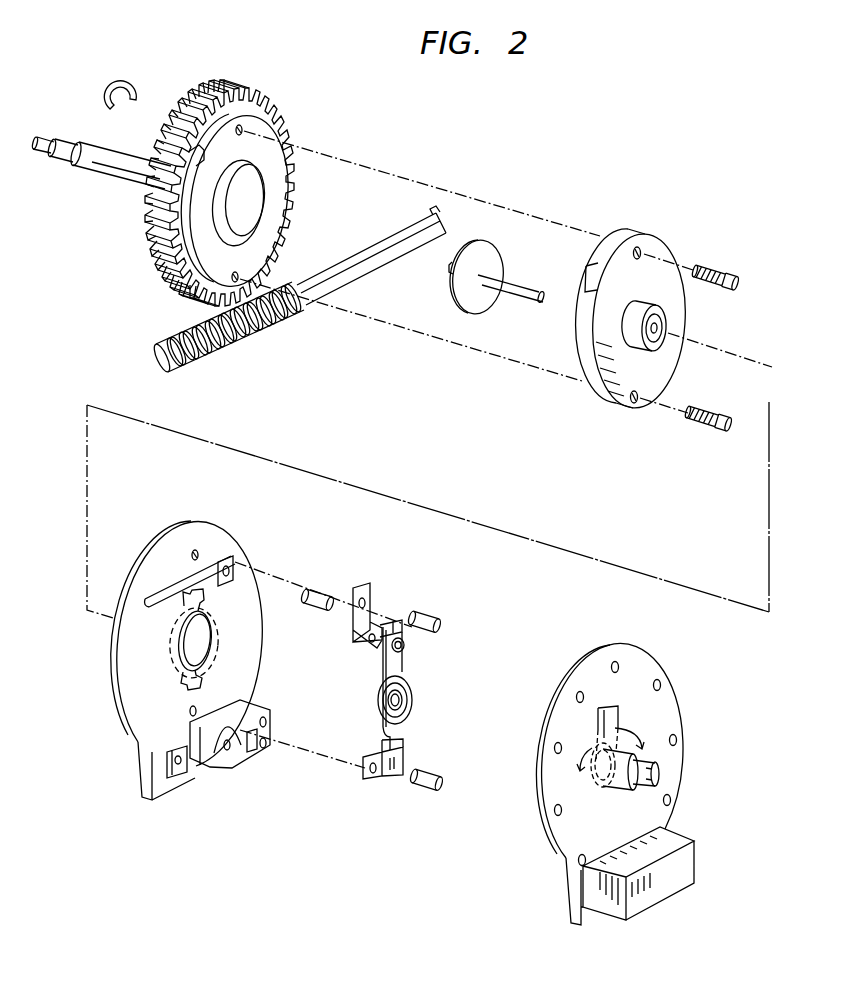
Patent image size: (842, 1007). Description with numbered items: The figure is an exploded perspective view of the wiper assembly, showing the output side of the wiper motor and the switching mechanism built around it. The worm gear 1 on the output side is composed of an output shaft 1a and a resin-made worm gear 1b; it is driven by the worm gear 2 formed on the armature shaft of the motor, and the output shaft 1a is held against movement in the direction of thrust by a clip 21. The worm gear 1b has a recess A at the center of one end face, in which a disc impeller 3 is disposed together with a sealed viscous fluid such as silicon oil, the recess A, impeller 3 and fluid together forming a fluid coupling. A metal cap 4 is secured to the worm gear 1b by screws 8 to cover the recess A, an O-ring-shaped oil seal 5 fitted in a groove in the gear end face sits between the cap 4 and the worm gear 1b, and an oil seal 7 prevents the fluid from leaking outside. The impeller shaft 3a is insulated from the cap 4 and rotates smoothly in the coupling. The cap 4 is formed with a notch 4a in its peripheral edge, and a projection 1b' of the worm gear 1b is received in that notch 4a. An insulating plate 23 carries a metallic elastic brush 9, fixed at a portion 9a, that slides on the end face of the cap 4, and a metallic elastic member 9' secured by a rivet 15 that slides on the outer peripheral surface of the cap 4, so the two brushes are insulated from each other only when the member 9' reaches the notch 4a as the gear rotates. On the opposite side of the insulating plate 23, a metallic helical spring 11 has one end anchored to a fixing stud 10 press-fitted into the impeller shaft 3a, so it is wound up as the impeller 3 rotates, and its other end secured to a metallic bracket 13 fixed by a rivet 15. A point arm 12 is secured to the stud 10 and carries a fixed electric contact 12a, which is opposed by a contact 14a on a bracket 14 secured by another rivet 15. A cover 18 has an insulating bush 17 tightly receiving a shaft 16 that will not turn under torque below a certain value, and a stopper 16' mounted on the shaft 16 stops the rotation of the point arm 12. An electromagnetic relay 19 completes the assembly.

The worm gear 1 is at (242, 112).
The output shaft 1a is at (110, 178).
The resin-made worm gear 1b is at (191, 193).
The projection of the worm gear 1b' is at (204, 114).
The O-ring-shaped oil seal 5 is at (263, 183).
The recess A is at (243, 212).
The clip 21 is at (122, 84).
The worm gear 2 is at (238, 345).
The disc impeller 3 is at (490, 257).
The impeller shaft 3a is at (513, 290).
The metal cap 4 is at (588, 347).
The notch 4a is at (590, 277).
The oil seal 7 is at (653, 327).
The screws 8 is at (697, 424).
The metallic elastic brush 9 is at (187, 660).
The metallic elastic member 9' is at (174, 577).
The fixing portion of the brush 9a is at (200, 610).
The rivet 15 is at (313, 607).
The bracket 14 is at (370, 590).
The contact 14a is at (380, 627).
The point arm 12 is at (385, 647).
The fixed electric contact 12a is at (407, 647).
The metallic helical spring 11 is at (408, 697).
The fixing stud 10 is at (400, 704).
The metallic bracket 13 is at (390, 776).
The electromagnetic relay 19 is at (238, 753).
The insulating plate 23 is at (170, 783).
The cover 18 is at (672, 702).
The stopper 16' is at (567, 722).
The shaft 16 is at (675, 768).
The insulating bush 17 is at (618, 778).